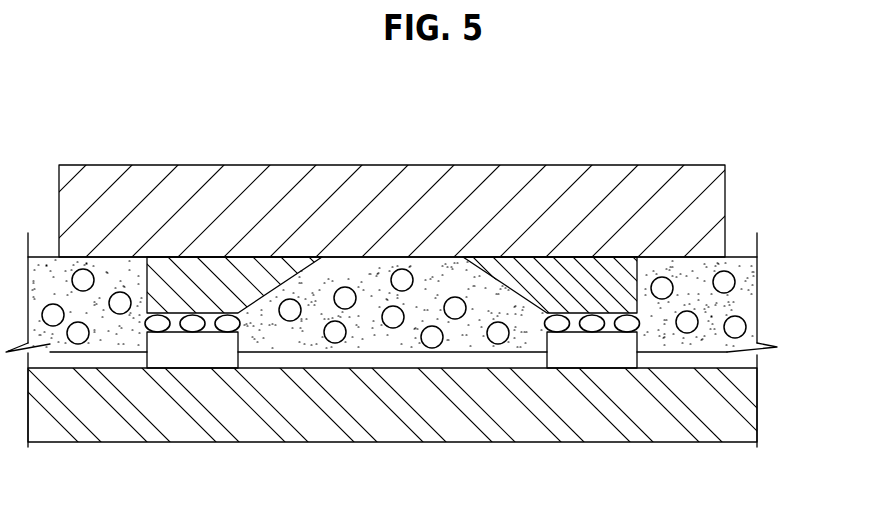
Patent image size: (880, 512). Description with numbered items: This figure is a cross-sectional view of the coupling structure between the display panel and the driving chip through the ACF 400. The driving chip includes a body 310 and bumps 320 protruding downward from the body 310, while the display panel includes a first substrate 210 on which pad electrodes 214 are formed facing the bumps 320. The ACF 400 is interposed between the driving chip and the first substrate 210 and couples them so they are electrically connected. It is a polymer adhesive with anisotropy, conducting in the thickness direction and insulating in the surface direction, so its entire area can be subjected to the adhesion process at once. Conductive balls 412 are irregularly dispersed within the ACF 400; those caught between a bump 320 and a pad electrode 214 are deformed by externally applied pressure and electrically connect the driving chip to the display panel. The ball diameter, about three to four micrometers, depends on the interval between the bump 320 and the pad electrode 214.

The body 310 is at (388, 212).
The bump 320 is at (572, 273).
The ACF 400 is at (737, 303).
The conductive ball 412 is at (724, 283).
The first substrate 210 is at (737, 400).
The pad electrode 214 is at (592, 352).